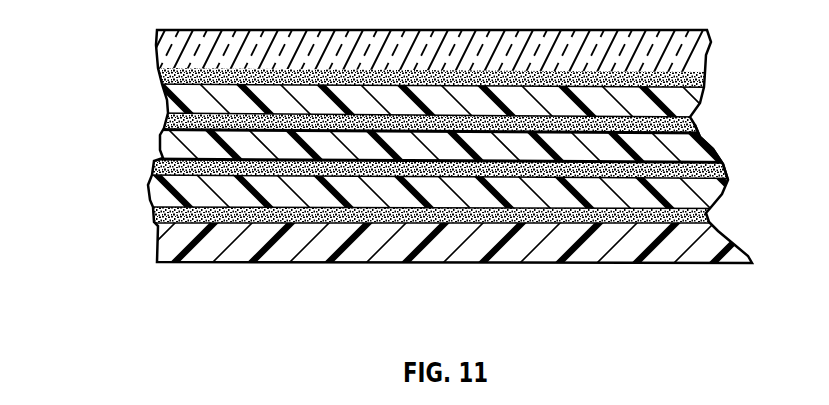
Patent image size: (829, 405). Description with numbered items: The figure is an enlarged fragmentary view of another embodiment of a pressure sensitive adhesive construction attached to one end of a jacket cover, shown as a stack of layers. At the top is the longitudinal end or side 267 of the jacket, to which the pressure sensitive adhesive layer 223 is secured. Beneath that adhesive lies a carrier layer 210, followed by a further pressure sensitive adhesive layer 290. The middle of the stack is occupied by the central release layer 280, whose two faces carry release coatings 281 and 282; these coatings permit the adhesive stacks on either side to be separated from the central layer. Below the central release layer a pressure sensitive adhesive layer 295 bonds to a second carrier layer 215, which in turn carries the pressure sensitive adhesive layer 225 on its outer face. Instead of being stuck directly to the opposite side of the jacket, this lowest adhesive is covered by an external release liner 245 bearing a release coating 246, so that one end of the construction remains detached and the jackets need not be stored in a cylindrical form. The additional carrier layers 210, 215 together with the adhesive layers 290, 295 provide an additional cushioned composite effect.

The longitudinal end or side 267 is at (157, 56).
The pressure sensitive adhesive layer 223 is at (158, 80).
The carrier layer 210 is at (173, 103).
The pressure sensitive adhesive layer 290 is at (164, 124).
The central release layer 280 is at (162, 150).
The pressure sensitive adhesive layer 295 is at (153, 170).
The carrier layer 215 is at (158, 190).
The pressure sensitive adhesive layer 225 is at (153, 210).
The release coating 246 is at (155, 223).
The external release liner 245 is at (160, 250).
The release coating 281 is at (700, 136).
The release coating 282 is at (722, 164).